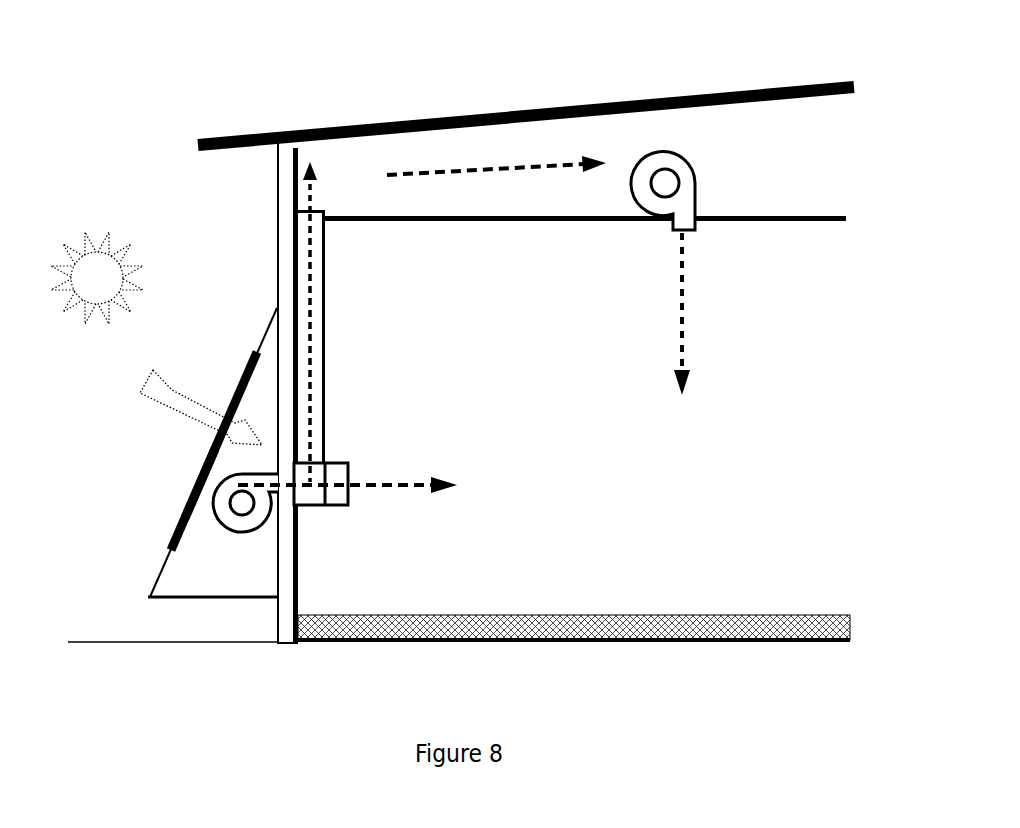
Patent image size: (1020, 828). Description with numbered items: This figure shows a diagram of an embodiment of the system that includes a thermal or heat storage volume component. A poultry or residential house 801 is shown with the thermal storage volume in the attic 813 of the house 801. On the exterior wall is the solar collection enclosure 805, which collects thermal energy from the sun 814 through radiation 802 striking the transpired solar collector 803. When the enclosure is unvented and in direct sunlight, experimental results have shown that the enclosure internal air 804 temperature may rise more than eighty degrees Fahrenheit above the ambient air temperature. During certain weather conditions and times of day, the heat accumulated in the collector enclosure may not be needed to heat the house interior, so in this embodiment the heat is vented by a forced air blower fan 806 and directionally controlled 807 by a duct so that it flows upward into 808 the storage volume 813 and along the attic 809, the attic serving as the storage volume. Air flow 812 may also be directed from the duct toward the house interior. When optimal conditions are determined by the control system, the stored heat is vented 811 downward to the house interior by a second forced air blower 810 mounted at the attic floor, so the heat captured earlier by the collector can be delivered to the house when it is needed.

The house 801 is at (514, 60).
The radiation 802 is at (176, 409).
The transpired solar collector 803 is at (180, 522).
The enclosure internal air 804 is at (182, 571).
The solar collection enclosure 805 is at (230, 365).
The forced air blower fan 806 is at (255, 518).
The directional control 807 is at (326, 325).
The flow into storage volume 808 is at (313, 185).
The storage volume flow 809 is at (519, 166).
The forced air blower 810 is at (693, 160).
The vented stored heat 811 is at (686, 312).
The horizontal air flow into room 812 is at (390, 484).
The thermal storage volume 813 is at (800, 170).
The solar 814 is at (124, 208).